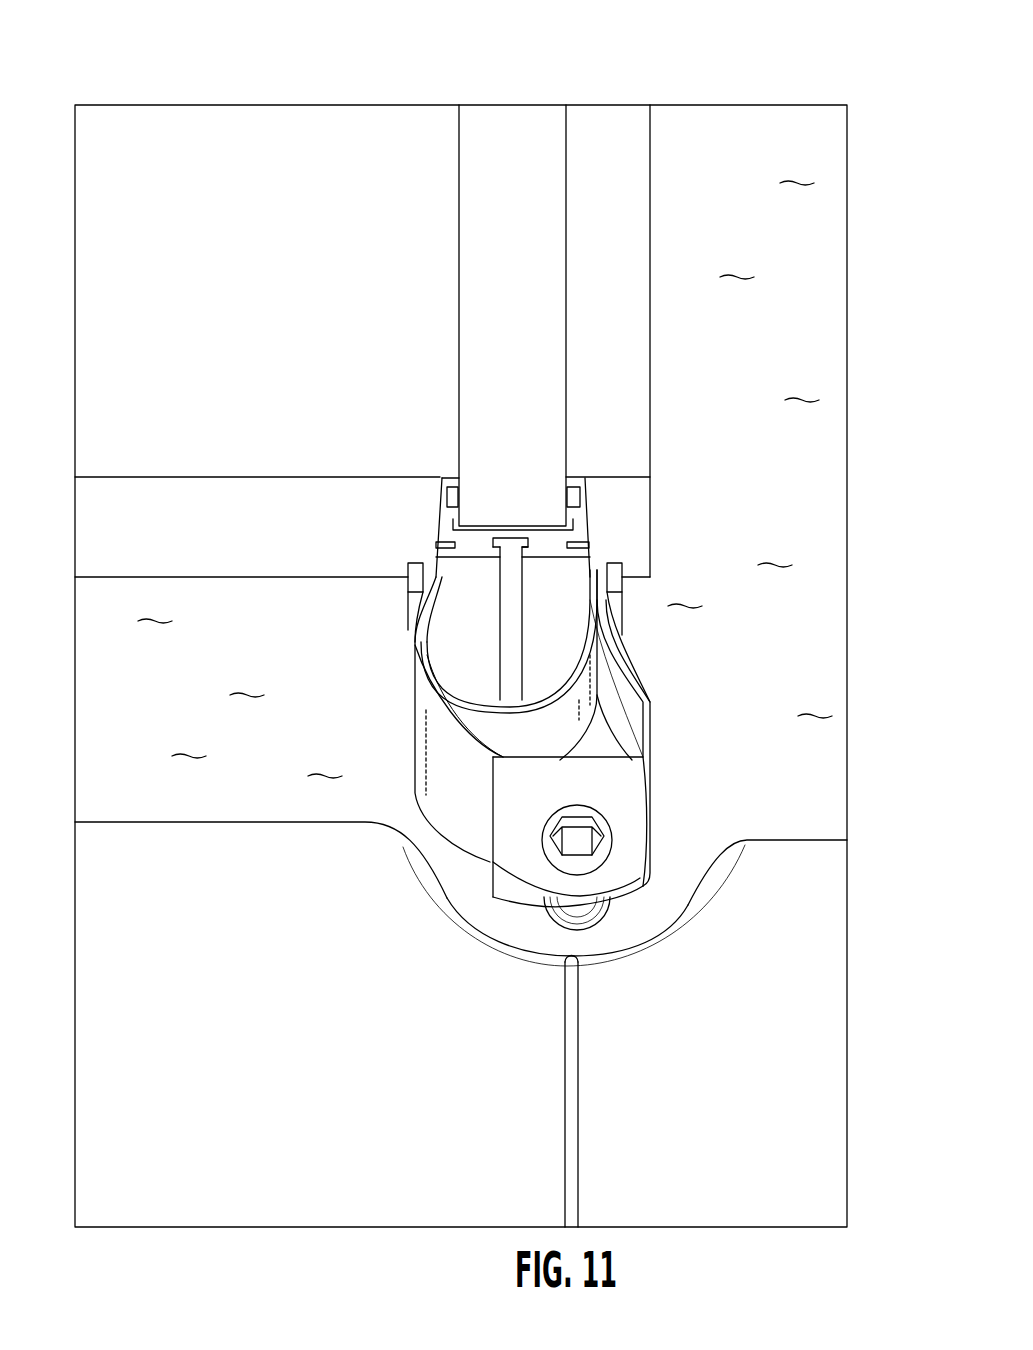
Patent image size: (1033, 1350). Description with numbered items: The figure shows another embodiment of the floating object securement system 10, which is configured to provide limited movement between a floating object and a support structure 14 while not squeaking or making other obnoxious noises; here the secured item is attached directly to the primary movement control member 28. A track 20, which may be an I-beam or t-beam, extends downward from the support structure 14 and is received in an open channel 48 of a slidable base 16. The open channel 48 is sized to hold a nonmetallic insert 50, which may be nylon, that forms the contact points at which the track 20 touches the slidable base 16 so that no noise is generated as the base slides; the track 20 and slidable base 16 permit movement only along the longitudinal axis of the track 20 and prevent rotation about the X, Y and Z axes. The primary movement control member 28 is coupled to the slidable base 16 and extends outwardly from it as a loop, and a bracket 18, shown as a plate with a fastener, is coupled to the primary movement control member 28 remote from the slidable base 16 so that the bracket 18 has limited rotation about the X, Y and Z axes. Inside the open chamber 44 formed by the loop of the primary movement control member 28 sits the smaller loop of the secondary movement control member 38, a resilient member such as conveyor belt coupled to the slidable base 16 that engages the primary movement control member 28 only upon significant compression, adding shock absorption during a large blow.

The floating object securement system 10 is at (722, 66).
The support structure 14 is at (333, 183).
The slidable base 16 is at (443, 520).
The bracket 18 is at (620, 793).
The track 20 is at (555, 320).
The primary movement control member 28 is at (472, 743).
The secondary movement control member 38 is at (462, 687).
The open chamber 44 is at (603, 733).
The open channel 48 is at (555, 510).
The nonmetallic insert 50 is at (572, 520).